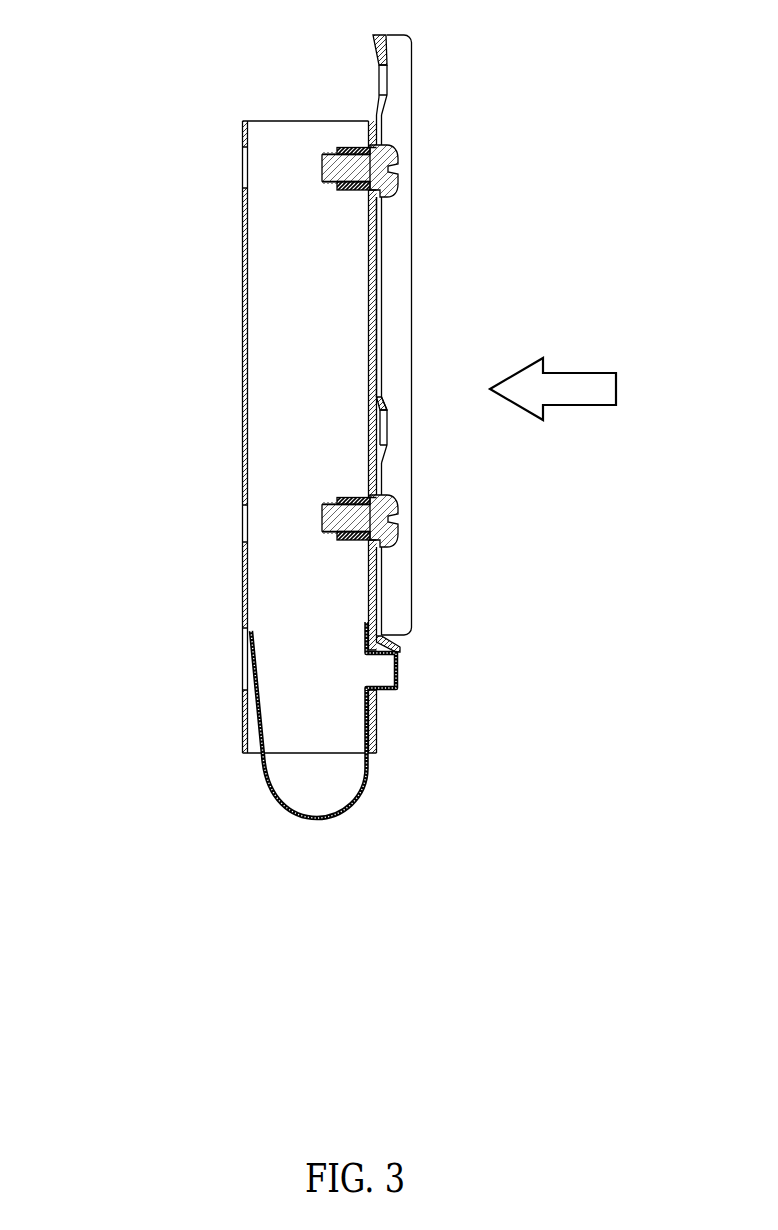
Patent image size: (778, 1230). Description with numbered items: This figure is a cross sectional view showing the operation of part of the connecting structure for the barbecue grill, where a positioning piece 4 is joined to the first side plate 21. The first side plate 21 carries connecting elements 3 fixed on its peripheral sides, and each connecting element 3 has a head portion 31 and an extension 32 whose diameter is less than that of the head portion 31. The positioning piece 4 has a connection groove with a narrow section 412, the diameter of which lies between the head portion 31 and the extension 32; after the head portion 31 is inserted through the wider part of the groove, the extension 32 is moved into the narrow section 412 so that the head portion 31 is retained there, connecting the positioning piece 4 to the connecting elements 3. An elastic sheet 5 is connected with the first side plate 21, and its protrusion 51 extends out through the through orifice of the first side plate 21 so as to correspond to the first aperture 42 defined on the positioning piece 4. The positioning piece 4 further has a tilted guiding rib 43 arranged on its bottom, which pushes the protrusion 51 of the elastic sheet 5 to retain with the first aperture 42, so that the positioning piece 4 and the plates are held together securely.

The first side plate 21 is at (243, 233).
The connecting element 3 is at (362, 365).
The head portion 31 is at (399, 514).
The extension 32 is at (382, 492).
The positioning piece 4 is at (505, 369).
The narrow section 412 is at (383, 427).
The first aperture 42 is at (505, 369).
The tilted guiding rib 43 is at (398, 649).
The elastic sheet 5 is at (436, 748).
The protrusion 51 is at (400, 677).